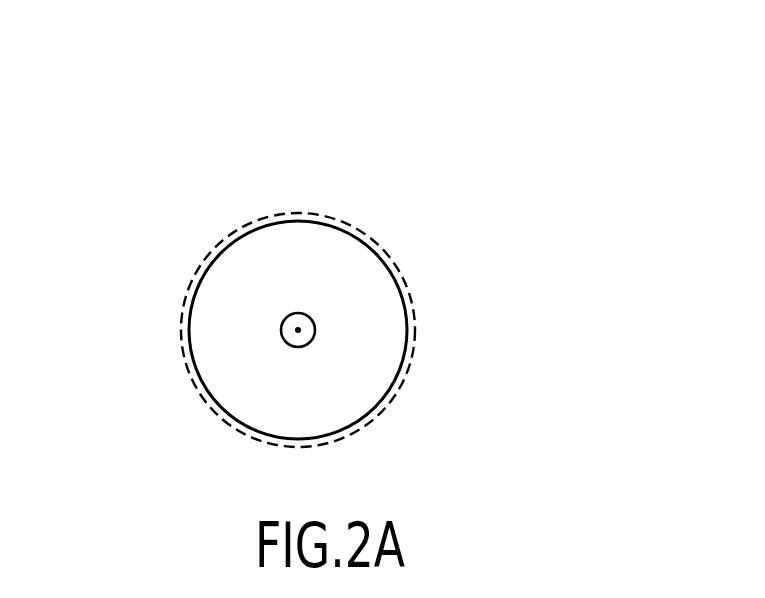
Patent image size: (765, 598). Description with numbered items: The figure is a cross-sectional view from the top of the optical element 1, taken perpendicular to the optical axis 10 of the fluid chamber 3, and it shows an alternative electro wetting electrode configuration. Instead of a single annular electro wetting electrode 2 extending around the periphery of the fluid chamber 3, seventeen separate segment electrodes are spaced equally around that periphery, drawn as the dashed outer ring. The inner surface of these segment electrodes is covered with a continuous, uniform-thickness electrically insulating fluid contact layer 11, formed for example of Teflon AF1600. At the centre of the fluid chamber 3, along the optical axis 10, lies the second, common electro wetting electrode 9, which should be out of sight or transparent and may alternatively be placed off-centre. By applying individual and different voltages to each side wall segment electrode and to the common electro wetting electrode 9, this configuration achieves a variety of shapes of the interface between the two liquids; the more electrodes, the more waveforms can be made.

The optical element 1 is at (273, 88).
The electro wetting electrode 2 is at (392, 220).
The fluid contact layer 11 is at (183, 310).
The second electro wetting electrode 9 is at (316, 333).
The optical axis 10 is at (302, 329).
The fluid chamber 3 is at (368, 355).